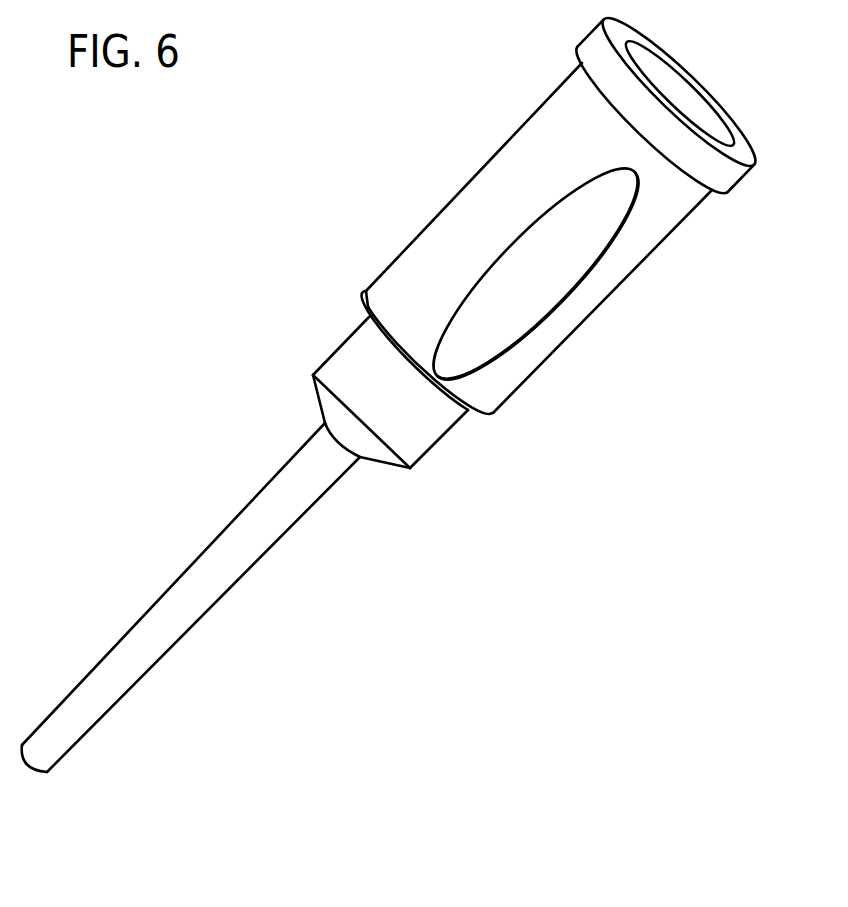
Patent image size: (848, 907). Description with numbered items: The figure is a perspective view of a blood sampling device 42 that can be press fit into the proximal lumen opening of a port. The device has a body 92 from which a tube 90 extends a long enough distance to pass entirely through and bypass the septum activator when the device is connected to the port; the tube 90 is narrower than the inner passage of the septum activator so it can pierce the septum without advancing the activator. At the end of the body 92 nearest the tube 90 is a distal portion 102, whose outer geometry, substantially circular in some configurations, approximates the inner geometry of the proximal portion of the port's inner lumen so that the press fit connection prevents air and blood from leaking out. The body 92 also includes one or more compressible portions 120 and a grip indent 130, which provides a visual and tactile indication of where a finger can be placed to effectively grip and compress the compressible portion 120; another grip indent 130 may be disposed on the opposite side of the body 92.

The blood sampling device 42 is at (398, 273).
The body 92 is at (517, 157).
The compressible portion 120 is at (577, 273).
The grip indent 130 is at (522, 330).
The distal portion 102 is at (428, 438).
The tube 90 is at (205, 592).